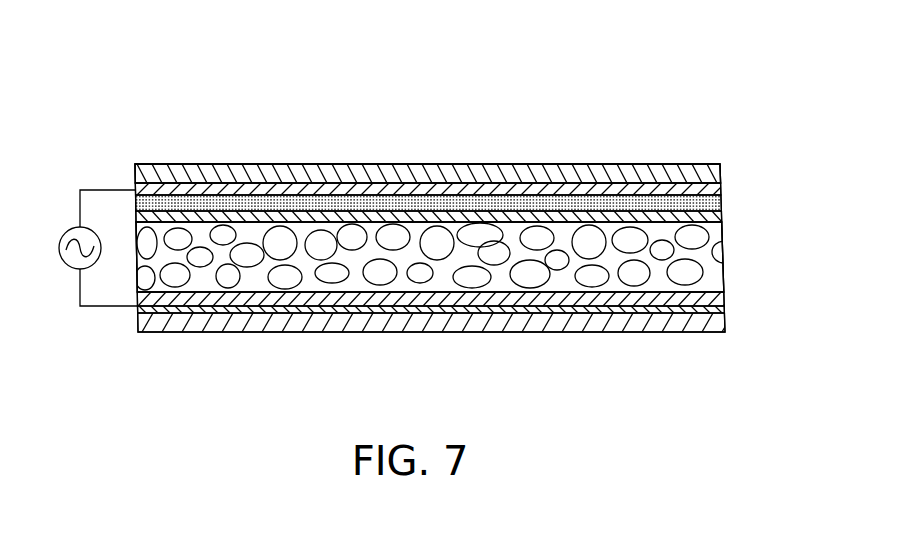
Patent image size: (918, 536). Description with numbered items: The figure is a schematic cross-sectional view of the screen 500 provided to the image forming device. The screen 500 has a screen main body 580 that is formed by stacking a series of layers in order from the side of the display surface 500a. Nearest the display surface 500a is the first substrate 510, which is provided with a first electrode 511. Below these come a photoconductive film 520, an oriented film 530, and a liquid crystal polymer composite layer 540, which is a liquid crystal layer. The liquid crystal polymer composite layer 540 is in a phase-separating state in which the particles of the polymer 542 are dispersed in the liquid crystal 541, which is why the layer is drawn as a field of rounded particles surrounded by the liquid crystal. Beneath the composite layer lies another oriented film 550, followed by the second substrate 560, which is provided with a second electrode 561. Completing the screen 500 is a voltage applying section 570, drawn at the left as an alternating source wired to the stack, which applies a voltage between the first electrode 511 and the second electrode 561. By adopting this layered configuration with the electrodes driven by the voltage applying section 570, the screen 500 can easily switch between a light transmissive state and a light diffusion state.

The screen 500 is at (551, 66).
The display surface 500a is at (465, 164).
The first substrate 510 is at (387, 164).
The first electrode 511 is at (309, 185).
The photoconductive film 520 is at (251, 195).
The oriented film 530 is at (595, 214).
The liquid crystal polymer composite layer 540 is at (727, 218).
The liquid crystal 541 is at (446, 277).
The polymer 542 is at (288, 278).
The oriented film 550 is at (500, 300).
The second substrate 560 is at (318, 330).
The second electrode 561 is at (383, 311).
The voltage applying section 570 is at (64, 259).
The screen main body 580 is at (196, 156).